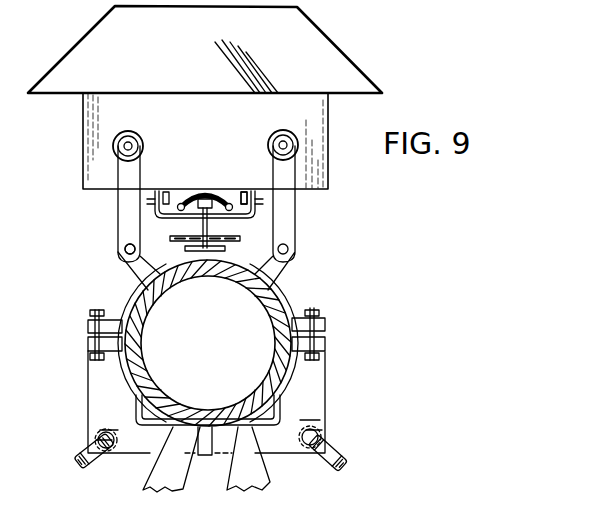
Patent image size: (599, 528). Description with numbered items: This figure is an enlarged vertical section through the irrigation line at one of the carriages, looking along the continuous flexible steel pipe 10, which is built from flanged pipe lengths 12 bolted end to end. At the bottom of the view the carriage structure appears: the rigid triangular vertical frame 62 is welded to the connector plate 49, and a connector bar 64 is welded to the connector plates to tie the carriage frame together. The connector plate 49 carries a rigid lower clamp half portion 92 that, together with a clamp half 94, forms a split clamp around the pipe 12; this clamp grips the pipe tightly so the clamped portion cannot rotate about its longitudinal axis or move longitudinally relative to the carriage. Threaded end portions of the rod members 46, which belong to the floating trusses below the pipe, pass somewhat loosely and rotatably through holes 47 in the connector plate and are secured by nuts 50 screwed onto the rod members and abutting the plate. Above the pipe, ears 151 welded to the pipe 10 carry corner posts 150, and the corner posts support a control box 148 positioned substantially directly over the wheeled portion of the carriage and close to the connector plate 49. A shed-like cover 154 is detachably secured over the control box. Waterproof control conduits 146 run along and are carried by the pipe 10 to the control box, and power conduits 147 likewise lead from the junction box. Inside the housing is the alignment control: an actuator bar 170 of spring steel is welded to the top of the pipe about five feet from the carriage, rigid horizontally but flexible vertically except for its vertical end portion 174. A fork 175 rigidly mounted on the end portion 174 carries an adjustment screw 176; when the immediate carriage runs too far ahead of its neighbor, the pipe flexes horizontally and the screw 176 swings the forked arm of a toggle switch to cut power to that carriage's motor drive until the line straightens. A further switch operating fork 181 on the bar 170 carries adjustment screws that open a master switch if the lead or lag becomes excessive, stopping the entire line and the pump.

The shed-like cover 154 is at (358, 72).
The control box 148 is at (330, 130).
The control conduit 146 is at (134, 137).
The power conduit 147 is at (284, 132).
The corner post 150 is at (120, 212).
The ear 151 is at (132, 270).
The vertical end portion 174 is at (200, 216).
The fork 175 is at (220, 194).
The adjustment screw 176 is at (245, 192).
The actuator bar 170 is at (180, 252).
The switch operating fork 181 is at (242, 220).
The flanged pipe length 12 is at (136, 290).
The clamp half 94 is at (296, 312).
The flexible steel pipe 10 is at (290, 292).
The lower clamp half portion 92 is at (325, 368).
The nut 50 is at (92, 404).
The connector plate 49 is at (325, 396).
The connector bar 64 is at (147, 428).
The vertical frame 62 is at (246, 456).
The rod member 46 is at (78, 459).
The hole 47 is at (98, 436).